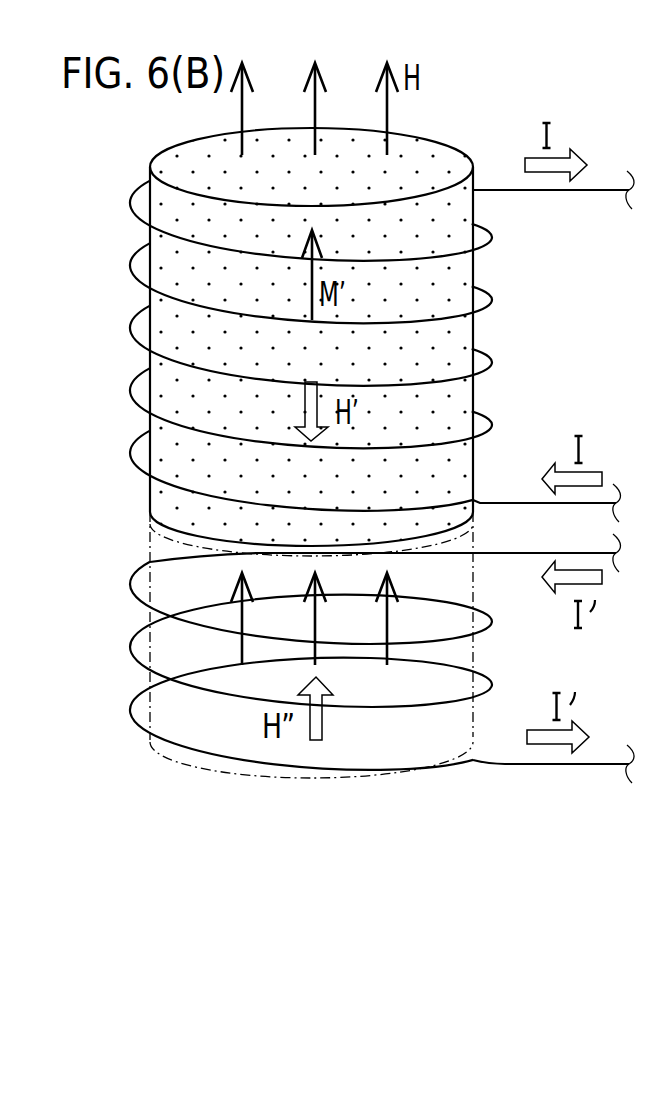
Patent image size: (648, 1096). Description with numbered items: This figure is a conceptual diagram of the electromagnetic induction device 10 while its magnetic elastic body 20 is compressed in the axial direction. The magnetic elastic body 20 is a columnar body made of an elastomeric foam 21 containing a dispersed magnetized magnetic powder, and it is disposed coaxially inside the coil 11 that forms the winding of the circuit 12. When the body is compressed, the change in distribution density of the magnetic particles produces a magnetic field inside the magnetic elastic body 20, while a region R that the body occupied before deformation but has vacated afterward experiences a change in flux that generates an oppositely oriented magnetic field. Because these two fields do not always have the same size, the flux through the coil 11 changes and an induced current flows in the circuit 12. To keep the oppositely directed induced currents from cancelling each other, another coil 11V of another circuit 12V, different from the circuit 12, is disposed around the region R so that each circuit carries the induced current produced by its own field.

The electromagnetic induction device 10 is at (450, 100).
The coil 11 is at (130, 199).
The circuit 12 is at (605, 194).
The magnetic elastic body 20 is at (480, 337).
The elastomeric foam 21 is at (452, 268).
The region R is at (150, 543).
The another coil 11V is at (130, 716).
The another circuit 12V is at (507, 766).